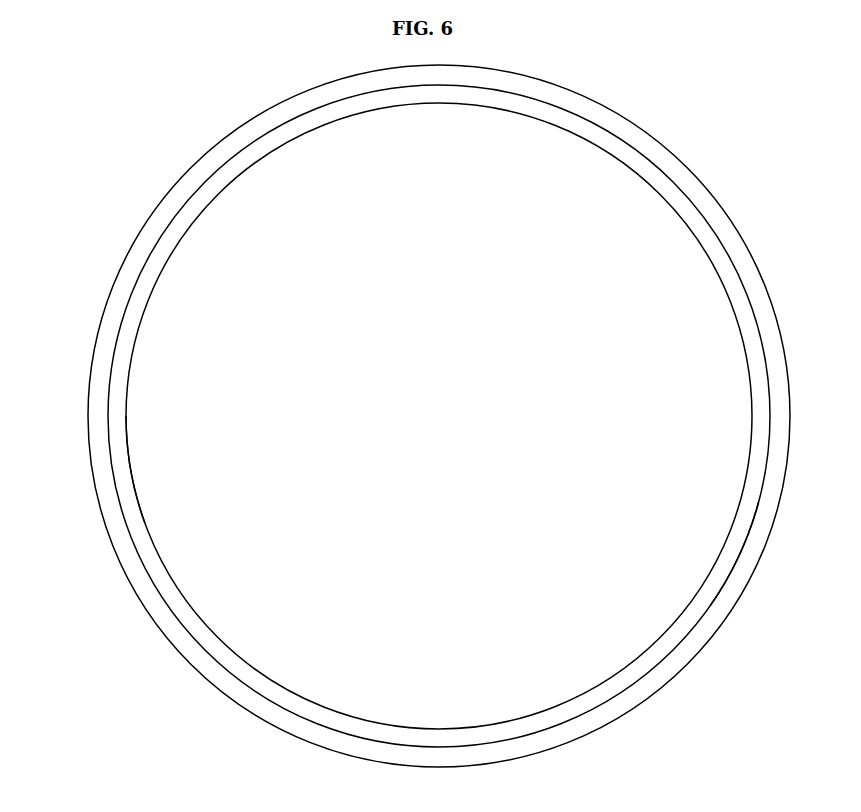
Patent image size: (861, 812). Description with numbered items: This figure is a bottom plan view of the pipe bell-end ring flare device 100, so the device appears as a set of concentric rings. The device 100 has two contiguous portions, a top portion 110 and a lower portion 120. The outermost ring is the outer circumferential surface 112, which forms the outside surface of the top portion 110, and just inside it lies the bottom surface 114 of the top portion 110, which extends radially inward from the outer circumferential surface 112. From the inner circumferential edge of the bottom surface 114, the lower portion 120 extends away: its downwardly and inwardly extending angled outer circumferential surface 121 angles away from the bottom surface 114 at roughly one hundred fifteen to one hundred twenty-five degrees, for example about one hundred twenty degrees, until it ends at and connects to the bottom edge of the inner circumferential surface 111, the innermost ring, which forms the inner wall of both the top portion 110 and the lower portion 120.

The pipe bell-end ring flare device 100 is at (145, 105).
The top portion 110 is at (75, 368).
The inner circumferential surface 111 is at (173, 247).
The outer circumferential surface 112 is at (133, 243).
The bottom surface 114 is at (752, 558).
The lower portion 120 is at (114, 492).
The downwardly and inwardly extending angled outer circumferential surface 121 is at (118, 393).